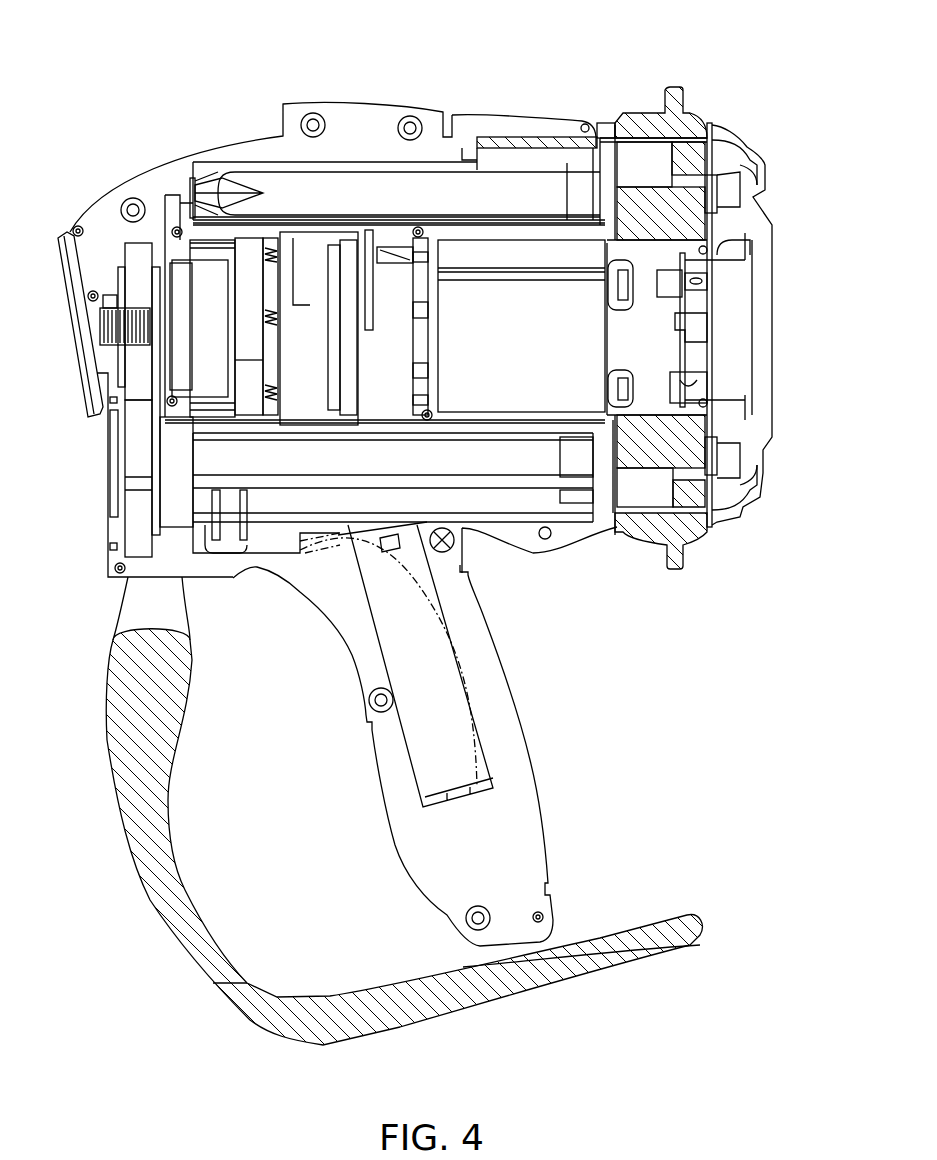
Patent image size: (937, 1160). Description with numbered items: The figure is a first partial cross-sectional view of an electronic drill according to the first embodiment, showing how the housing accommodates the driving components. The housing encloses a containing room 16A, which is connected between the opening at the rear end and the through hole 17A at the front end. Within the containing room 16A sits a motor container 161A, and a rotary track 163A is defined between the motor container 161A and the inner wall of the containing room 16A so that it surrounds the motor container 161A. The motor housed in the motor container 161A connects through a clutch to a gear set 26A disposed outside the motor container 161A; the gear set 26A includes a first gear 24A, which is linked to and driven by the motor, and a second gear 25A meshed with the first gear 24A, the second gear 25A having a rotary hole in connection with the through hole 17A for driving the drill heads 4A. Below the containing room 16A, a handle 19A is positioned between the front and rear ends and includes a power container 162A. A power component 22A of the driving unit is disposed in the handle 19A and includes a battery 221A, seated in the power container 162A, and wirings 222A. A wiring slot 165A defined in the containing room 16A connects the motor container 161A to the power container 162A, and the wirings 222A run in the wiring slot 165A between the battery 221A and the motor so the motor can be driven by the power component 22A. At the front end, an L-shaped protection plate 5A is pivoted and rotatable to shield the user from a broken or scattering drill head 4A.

The containing room 16A is at (348, 157).
The rotary track 163A is at (523, 160).
The drill heads 4A is at (450, 197).
The motor container 161A is at (196, 174).
The gear set 26A is at (90, 130).
The second gear 25A is at (97, 293).
The first gear 24A is at (133, 257).
The through hole 17A is at (108, 440).
The wiring slot 165A is at (205, 503).
The protection plate 5A is at (183, 923).
The handle 19A is at (524, 847).
The power container 162A is at (483, 735).
The power component 22A is at (305, 795).
The battery 221A is at (425, 637).
The wirings 222A is at (312, 562).